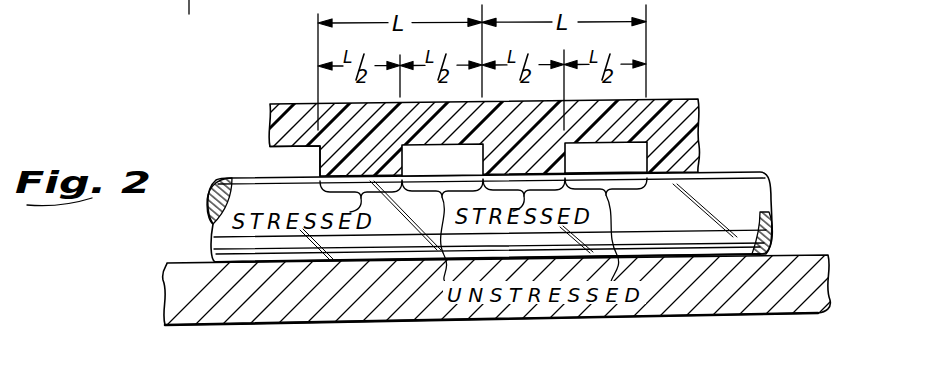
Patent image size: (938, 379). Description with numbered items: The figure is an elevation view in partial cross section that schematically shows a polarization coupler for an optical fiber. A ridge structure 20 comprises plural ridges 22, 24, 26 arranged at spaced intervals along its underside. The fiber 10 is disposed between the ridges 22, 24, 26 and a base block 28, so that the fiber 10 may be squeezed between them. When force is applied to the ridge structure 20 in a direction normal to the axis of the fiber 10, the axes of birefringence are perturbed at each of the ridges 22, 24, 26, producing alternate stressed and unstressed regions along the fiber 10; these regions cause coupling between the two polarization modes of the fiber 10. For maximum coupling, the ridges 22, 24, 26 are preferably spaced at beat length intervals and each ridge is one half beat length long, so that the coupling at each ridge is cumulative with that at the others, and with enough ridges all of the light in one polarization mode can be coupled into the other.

The fiber 10 is at (772, 162).
The ridge structure 20 is at (701, 118).
The ridge 22 is at (320, 163).
The ridge 24 is at (488, 158).
The ridge 26 is at (654, 156).
The base block 28 is at (762, 298).